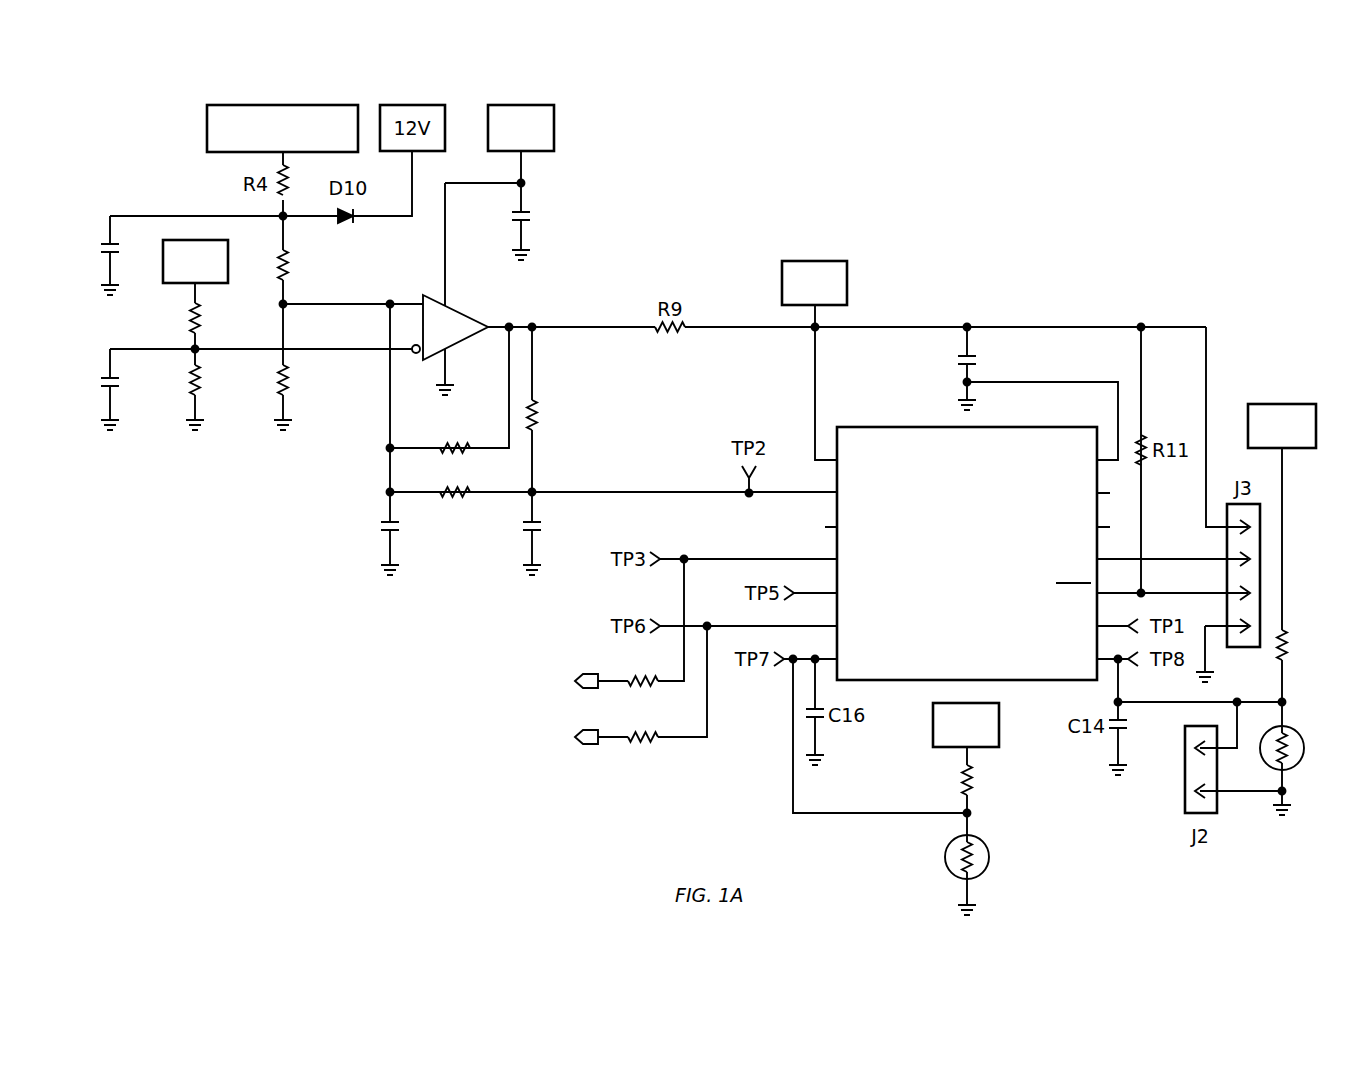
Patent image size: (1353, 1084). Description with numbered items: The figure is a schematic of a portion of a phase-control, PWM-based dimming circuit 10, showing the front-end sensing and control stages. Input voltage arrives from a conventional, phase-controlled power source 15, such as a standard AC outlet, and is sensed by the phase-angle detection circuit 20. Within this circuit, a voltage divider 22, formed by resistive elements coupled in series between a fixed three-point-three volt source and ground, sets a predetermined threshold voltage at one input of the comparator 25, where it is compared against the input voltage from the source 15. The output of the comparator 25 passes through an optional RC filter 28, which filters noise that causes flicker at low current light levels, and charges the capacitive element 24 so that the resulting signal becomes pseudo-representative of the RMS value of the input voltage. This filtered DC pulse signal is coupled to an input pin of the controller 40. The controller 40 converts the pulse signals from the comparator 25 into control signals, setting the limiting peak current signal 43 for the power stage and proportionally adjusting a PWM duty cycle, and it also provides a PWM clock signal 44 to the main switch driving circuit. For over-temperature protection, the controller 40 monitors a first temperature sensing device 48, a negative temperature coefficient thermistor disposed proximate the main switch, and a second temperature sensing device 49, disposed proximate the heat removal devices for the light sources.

The dimming circuit 10 is at (978, 161).
The power source 15 is at (207, 134).
The phase-angle detection circuit 20 is at (234, 388).
The voltage divider 22 is at (210, 364).
The capacitive element 24 is at (522, 528).
The comparator 25 is at (458, 348).
The RC filter 28 is at (589, 439).
The controller 40 is at (888, 408).
The peak current signal 43 is at (588, 674).
The PWM clock signal 44 is at (588, 745).
The first temperature sensing device 48 is at (945, 858).
The second temperature sensing device 49 is at (1300, 733).